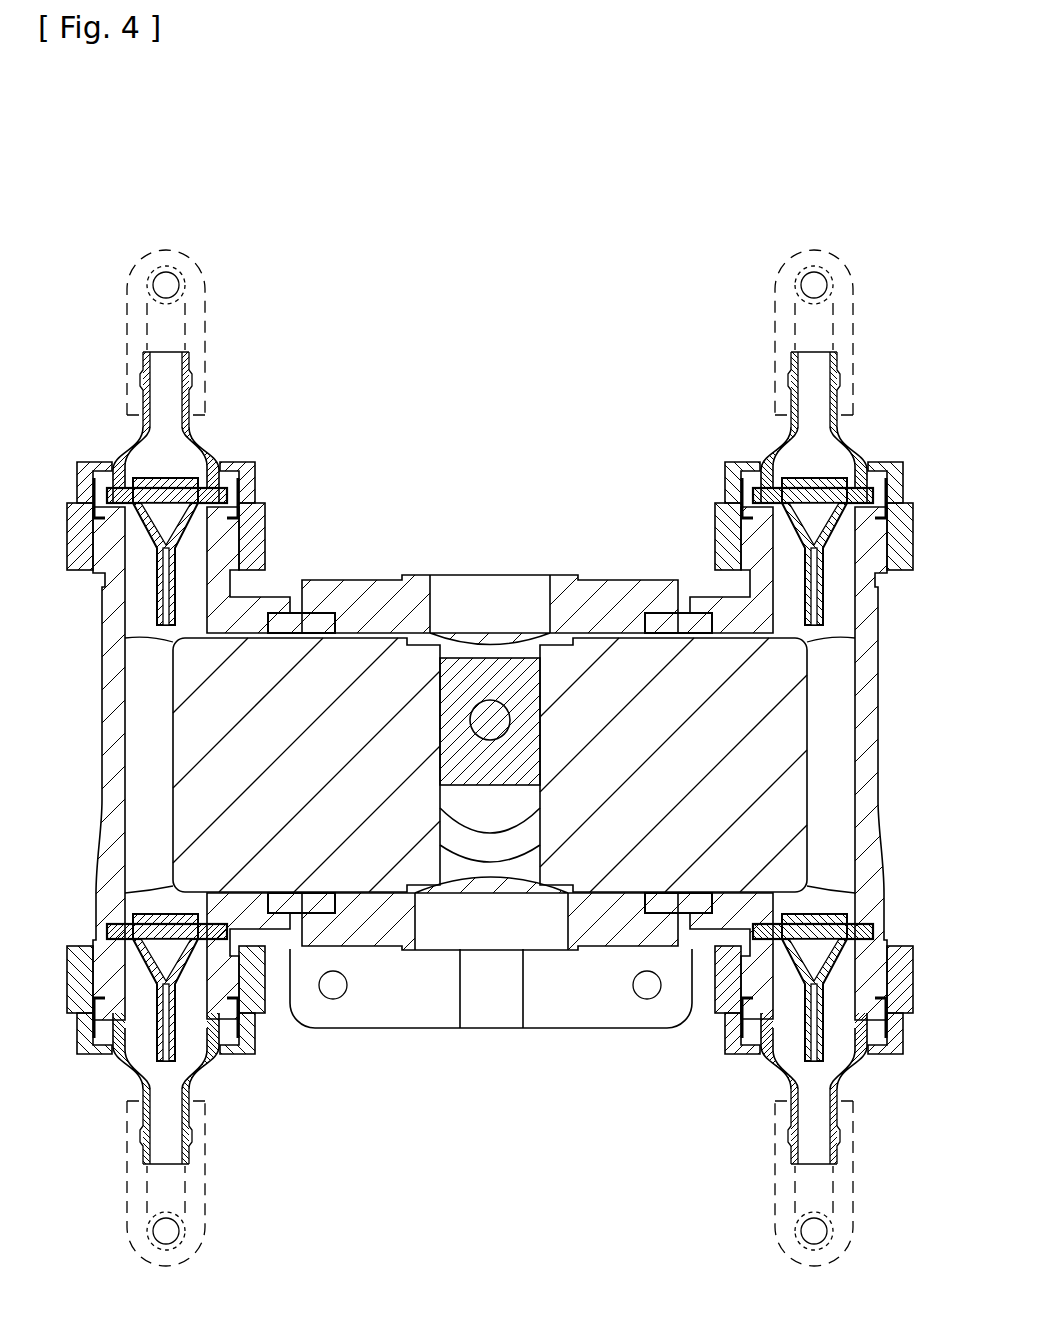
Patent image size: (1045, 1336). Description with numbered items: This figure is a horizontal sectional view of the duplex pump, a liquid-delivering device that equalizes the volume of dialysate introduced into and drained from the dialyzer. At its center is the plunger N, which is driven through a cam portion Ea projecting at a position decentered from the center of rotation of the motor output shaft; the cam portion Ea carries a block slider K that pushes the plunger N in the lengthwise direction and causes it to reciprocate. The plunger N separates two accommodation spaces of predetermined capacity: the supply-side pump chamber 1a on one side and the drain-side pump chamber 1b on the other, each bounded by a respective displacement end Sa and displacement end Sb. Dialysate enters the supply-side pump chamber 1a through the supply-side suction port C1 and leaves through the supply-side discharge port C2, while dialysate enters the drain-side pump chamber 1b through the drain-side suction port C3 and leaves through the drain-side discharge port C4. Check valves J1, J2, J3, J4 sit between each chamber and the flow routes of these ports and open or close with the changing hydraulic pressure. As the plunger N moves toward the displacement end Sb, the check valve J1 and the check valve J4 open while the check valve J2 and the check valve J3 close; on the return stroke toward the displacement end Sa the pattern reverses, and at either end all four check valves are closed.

The supply-side suction port C1 is at (800, 1222).
The supply-side discharge port C2 is at (800, 283).
The drain-side suction port C3 is at (180, 1222).
The drain-side discharge port C4 is at (180, 283).
The check valve J1 is at (792, 1012).
The check valve J2 is at (790, 528).
The check valve J3 is at (150, 988).
The check valve J4 is at (178, 495).
The supply-side pump chamber 1a is at (845, 805).
The drain-side pump chamber 1b is at (145, 701).
The displacement end Sa is at (875, 717).
The displacement end Sb is at (112, 752).
The cam portion Ea is at (485, 700).
The block slider K is at (520, 688).
The plunger N is at (613, 655).